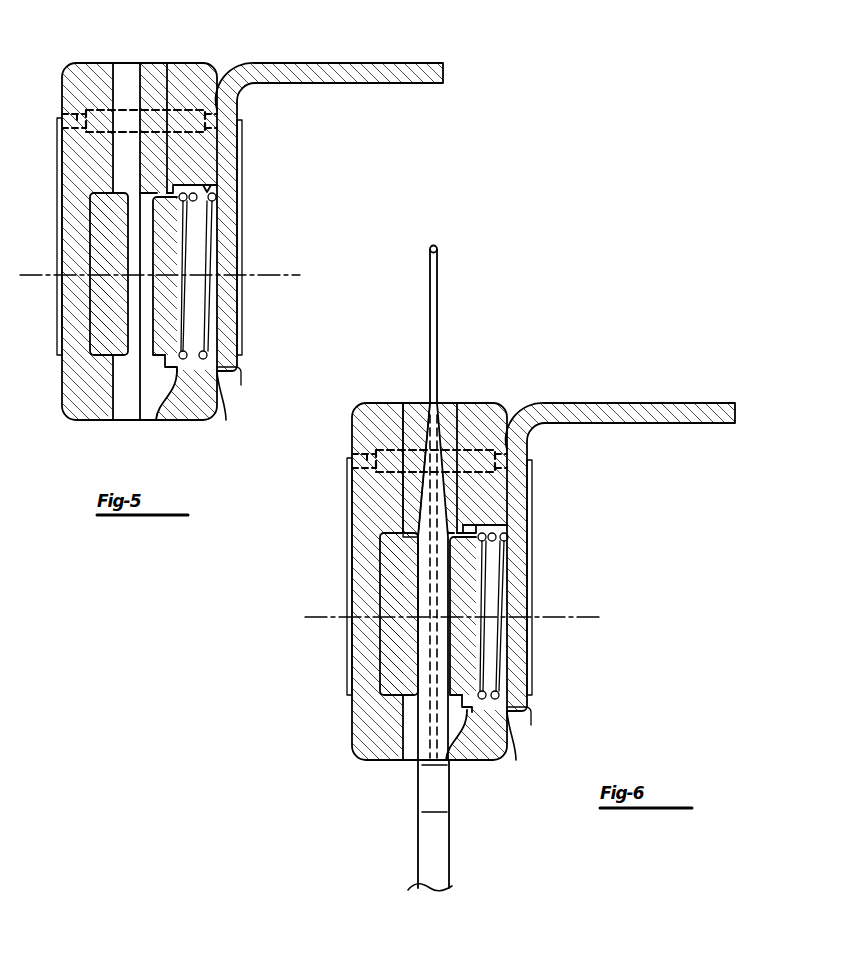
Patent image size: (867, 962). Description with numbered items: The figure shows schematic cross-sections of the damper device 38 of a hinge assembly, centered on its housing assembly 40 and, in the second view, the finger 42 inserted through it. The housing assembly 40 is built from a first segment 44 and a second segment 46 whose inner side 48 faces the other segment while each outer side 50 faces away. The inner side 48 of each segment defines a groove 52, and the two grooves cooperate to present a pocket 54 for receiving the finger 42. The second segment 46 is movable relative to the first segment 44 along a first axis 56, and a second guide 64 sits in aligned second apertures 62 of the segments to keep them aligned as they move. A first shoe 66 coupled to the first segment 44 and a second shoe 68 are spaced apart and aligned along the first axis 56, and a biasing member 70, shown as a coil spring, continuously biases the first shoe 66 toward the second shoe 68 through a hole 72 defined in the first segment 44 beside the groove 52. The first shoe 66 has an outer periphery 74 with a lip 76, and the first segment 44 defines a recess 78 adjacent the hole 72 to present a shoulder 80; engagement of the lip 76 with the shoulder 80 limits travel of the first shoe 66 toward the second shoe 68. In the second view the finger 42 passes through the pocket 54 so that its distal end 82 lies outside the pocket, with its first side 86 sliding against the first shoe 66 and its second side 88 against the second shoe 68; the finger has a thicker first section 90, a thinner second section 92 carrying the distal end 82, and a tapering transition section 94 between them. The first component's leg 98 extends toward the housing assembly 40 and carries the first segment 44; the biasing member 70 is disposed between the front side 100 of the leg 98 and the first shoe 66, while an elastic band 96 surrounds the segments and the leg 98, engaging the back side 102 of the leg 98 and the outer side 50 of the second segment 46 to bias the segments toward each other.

In FIG. 5, the damper device 38 is at (493, 64).
In FIG. 6, the damper device 38 is at (566, 361).
In FIG. 5, the housing assembly 40 is at (60, 428).
In FIG. 6, the housing assembly 40 is at (403, 601).
In FIG. 6, the finger 42 is at (430, 910).
In FIG. 5, the first segment 44 is at (192, 421).
In FIG. 6, the first segment 44 is at (476, 562).
In FIG. 5, the second segment 46 is at (72, 396).
In FIG. 6, the second segment 46 is at (351, 581).
In FIG. 5, the inner side 48 is at (140, 63).
In FIG. 6, the inner side 48 is at (421, 614).
In FIG. 5, the outer side 50 is at (62, 91).
In FIG. 6, the outer side 50 is at (431, 580).
In FIG. 5, the groove 52 is at (153, 70).
In FIG. 6, the groove 52 is at (400, 562).
In FIG. 5, the pocket 54 is at (125, 50).
In FIG. 6, the pocket 54 is at (399, 376).
In FIG. 5, the first axis 56 is at (290, 272).
In FIG. 6, the first axis 56 is at (456, 588).
In FIG. 5, the second aperture 62 is at (62, 122).
In FIG. 6, the second aperture 62 is at (333, 464).
In FIG. 5, the second guide 64 is at (217, 118).
In FIG. 6, the second guide 64 is at (412, 431).
In FIG. 5, the first shoe 66 is at (170, 246).
In FIG. 6, the first shoe 66 is at (514, 616).
In FIG. 5, the second shoe 68 is at (96, 236).
In FIG. 6, the second shoe 68 is at (366, 614).
In FIG. 5, the biasing member 70 is at (216, 197).
In FIG. 6, the biasing member 70 is at (526, 610).
In FIG. 5, the hole 72 is at (224, 296).
In FIG. 6, the hole 72 is at (530, 616).
In FIG. 5, the outer periphery 74 is at (140, 191).
In FIG. 6, the outer periphery 74 is at (465, 505).
In FIG. 5, the lip 76 is at (163, 401).
In FIG. 6, the lip 76 is at (473, 755).
In FIG. 5, the recess 78 is at (208, 186).
In FIG. 6, the recess 78 is at (516, 511).
In FIG. 5, the shoulder 80 is at (165, 191).
In FIG. 6, the shoulder 80 is at (478, 610).
In FIG. 6, the distal end 82 is at (457, 253).
In FIG. 6, the first side 86 is at (459, 824).
In FIG. 6, the second side 88 is at (398, 797).
In FIG. 6, the first section 90 is at (376, 581).
In FIG. 6, the second section 92 is at (457, 326).
In FIG. 6, the transition section 94 is at (364, 470).
In FIG. 5, the elastic band 96 is at (58, 303).
In FIG. 6, the elastic band 96 is at (326, 576).
In FIG. 5, the leg 98 is at (232, 359).
In FIG. 6, the leg 98 is at (541, 627).
In FIG. 5, the front side 100 is at (220, 386).
In FIG. 6, the front side 100 is at (520, 750).
In FIG. 5, the back side 102 is at (240, 104).
In FIG. 6, the back side 102 is at (620, 557).